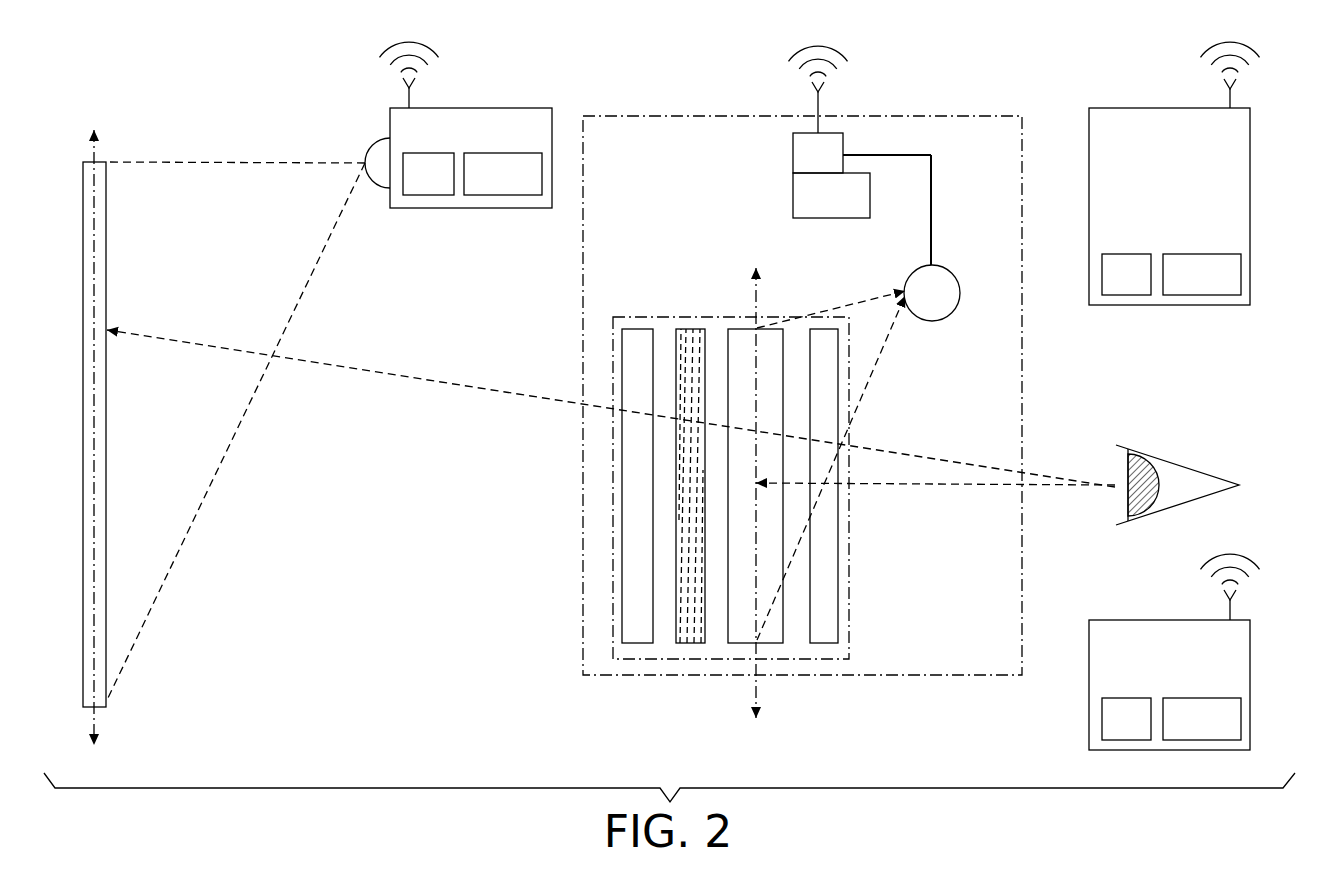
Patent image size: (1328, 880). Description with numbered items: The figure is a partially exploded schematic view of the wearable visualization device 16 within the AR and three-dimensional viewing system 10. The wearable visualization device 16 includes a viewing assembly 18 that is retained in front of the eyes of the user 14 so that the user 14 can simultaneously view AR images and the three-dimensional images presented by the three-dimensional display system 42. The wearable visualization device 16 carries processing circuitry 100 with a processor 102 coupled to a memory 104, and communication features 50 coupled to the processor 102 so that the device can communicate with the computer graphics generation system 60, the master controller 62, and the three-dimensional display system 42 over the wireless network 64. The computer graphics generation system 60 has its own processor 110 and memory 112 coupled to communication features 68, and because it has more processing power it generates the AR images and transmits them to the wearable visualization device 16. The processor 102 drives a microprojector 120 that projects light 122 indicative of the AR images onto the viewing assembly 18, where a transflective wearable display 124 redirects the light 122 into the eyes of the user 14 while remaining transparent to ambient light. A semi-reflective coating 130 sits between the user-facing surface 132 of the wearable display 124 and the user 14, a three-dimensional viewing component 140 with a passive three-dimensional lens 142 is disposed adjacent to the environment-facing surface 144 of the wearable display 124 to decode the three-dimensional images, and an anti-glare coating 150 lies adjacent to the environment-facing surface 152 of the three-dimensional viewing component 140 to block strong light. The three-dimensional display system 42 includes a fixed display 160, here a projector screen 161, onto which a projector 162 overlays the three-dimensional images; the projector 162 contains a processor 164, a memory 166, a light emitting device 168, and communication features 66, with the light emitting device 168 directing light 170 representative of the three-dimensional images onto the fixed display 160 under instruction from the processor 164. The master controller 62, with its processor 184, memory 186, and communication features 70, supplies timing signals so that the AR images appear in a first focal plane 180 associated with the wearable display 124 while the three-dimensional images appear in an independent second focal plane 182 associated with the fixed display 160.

The AR and 3-D viewing system 10 is at (1058, 44).
The user 14 is at (1175, 465).
The wearable visualization device 16 is at (926, 100).
The viewing assembly 18 is at (856, 652).
The 3-D display system 42 is at (468, 92).
The communication features 50 is at (822, 106).
The computer graphics generation system 60 is at (1272, 202).
The master controller 62 is at (1270, 692).
The wireless network 64 is at (1113, 85).
The communication features 66 is at (404, 100).
The communication features 68 is at (1232, 100).
The communication features 70 is at (1232, 609).
The processing circuitry 100 is at (750, 170).
The processor 102 is at (793, 155).
The memory 104 is at (830, 219).
The processor 110 is at (1127, 296).
The memory 112 is at (1202, 296).
The microprojector 120 is at (950, 318).
The light 122 is at (875, 363).
The wearable display 124 is at (740, 649).
The semi-reflective coating 130 is at (825, 648).
The user-facing surface 132 is at (783, 643).
The 3-D viewing component 140 is at (690, 648).
The passive 3-D lens 142 is at (705, 620).
The environment-facing surface 144 is at (732, 340).
The anti-glare coating 150 is at (637, 648).
The environment-facing surface 152 is at (680, 345).
The fixed display 160 is at (122, 256).
The projector screen 161 is at (83, 272).
The projector 162 is at (508, 94).
The processor 164 is at (428, 196).
The memory 166 is at (503, 196).
The light emitting device 168 is at (375, 146).
The light 170 is at (303, 290).
The first focal plane 180 is at (758, 698).
The second focal plane 182 is at (94, 735).
The processor 184 is at (1127, 741).
The memory 186 is at (1202, 741).